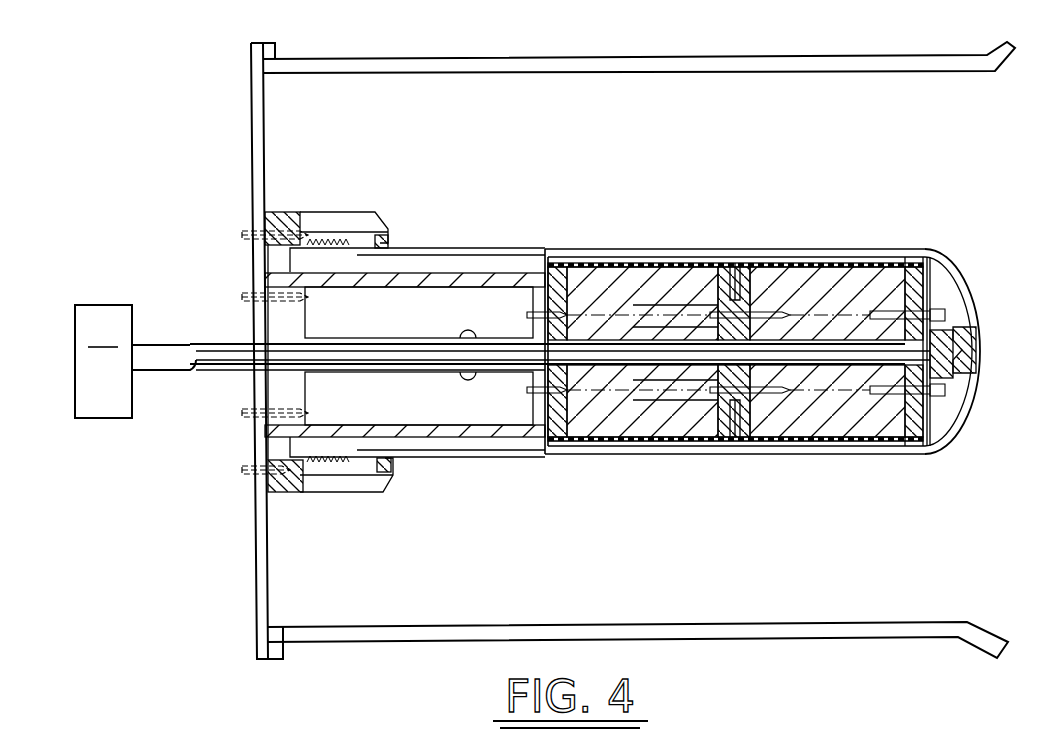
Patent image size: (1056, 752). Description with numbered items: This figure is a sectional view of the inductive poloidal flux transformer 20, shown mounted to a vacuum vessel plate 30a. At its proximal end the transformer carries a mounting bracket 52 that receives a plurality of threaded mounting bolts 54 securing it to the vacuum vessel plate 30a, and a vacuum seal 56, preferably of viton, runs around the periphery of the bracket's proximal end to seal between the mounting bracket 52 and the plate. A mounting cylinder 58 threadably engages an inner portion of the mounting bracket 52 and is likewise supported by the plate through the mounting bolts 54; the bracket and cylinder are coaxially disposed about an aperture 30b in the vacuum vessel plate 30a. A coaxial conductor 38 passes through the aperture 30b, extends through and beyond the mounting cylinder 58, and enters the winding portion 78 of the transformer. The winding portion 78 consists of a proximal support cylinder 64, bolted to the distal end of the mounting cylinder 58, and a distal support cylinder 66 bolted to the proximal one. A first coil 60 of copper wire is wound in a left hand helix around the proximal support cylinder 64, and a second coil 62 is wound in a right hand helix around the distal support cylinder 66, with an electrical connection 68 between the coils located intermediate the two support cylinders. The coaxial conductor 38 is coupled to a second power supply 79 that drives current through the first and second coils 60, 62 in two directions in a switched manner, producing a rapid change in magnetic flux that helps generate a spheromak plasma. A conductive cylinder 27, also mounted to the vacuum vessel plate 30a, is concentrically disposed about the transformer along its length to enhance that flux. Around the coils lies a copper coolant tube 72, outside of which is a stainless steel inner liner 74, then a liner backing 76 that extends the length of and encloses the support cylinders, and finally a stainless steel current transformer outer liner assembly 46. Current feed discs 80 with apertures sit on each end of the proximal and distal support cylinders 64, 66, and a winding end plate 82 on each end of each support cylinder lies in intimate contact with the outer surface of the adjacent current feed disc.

The poloidal flux transformer 20 is at (468, 232).
The conductive cylinder 27 is at (813, 638).
The vacuum vessel plate 30a is at (257, 533).
The aperture 30b is at (256, 377).
The coaxial conductor 38 is at (474, 378).
The current transformer outer liner assembly 46 is at (934, 247).
The mounting bracket 52 is at (364, 492).
The mounting bolts 54 is at (253, 470).
The vacuum seal 56 is at (284, 492).
The mounting cylinder 58 is at (422, 438).
The first coil 60 is at (637, 276).
The second coil 62 is at (788, 314).
The proximal support cylinder 64 is at (642, 313).
The distal support cylinder 66 is at (813, 282).
The electrical connection 68 is at (727, 410).
The coolant tube 72 is at (780, 442).
The inner liner 74 is at (807, 445).
The liner backing 76 is at (903, 253).
The winding portion 78 is at (901, 464).
The second power supply 79 is at (135, 361).
The current feed discs 80 is at (917, 288).
The winding end plate 82 is at (928, 293).